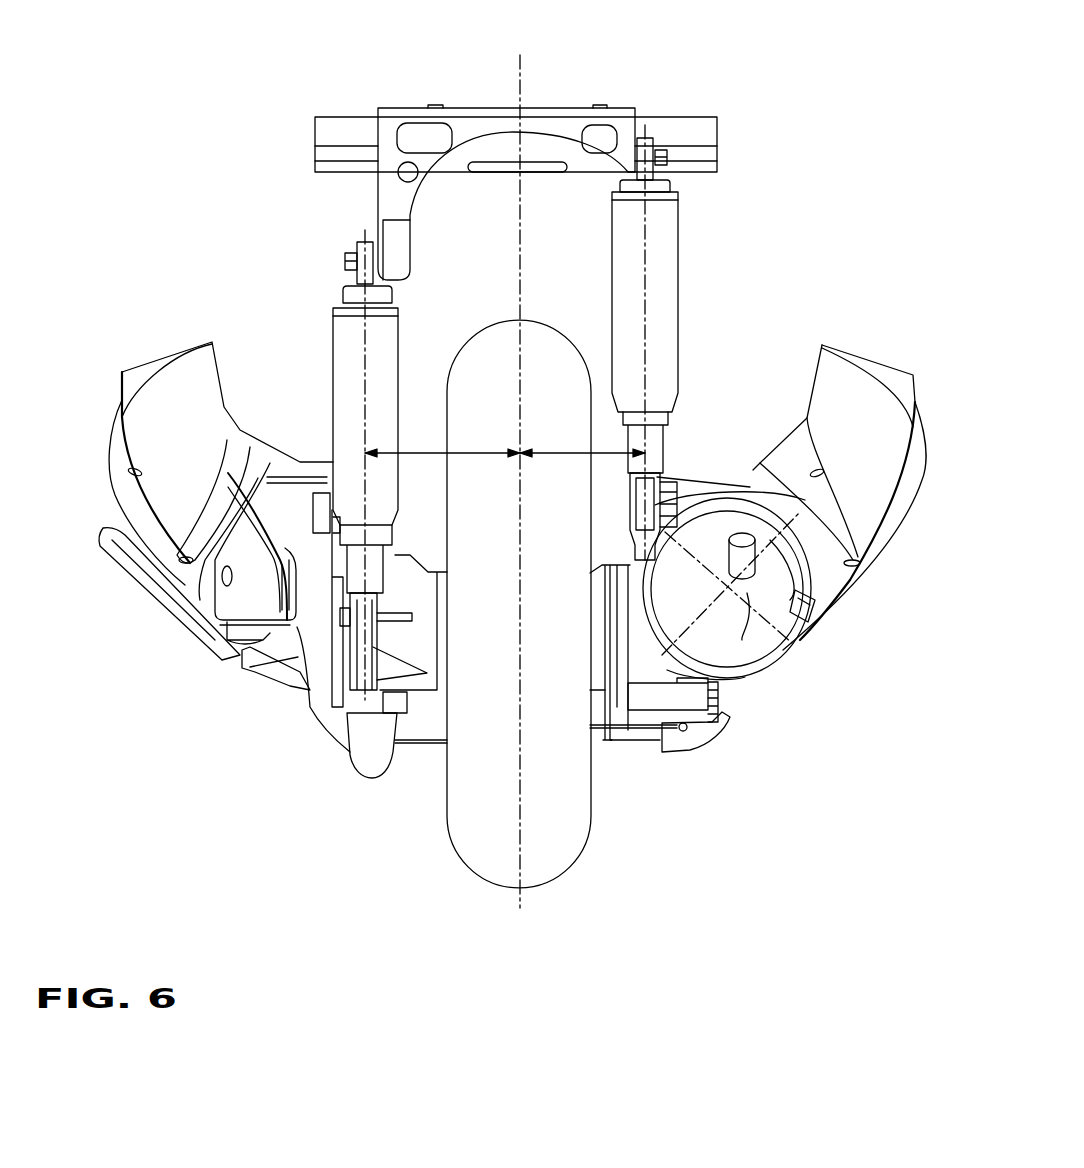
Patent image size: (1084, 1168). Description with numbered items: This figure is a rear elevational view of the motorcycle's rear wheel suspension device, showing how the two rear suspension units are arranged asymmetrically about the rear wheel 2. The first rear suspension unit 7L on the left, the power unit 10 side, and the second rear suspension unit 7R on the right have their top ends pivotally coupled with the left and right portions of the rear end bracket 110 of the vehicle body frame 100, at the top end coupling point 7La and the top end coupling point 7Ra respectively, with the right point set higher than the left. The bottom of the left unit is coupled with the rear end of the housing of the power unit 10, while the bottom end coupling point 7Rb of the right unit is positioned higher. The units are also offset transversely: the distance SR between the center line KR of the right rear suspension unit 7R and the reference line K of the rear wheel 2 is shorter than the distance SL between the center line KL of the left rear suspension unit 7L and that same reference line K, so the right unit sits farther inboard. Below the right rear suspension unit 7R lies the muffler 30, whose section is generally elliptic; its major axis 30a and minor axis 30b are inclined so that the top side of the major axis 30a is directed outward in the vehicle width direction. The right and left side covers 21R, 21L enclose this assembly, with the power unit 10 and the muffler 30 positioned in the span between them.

The rear wheel 2 is at (464, 823).
The power unit 10 is at (245, 677).
The left side cover 21L is at (142, 432).
The right side cover 21R is at (893, 522).
The first rear suspension unit 7L is at (334, 318).
The second rear suspension unit 7R is at (681, 319).
The top end coupling point 7La is at (352, 262).
The top end coupling point 7Ra is at (668, 162).
The bottom end coupling point 7Rb is at (680, 493).
The muffler 30 is at (746, 621).
The major axis 30a is at (803, 600).
The minor axis 30b is at (767, 630).
The vehicle body frame 100 is at (678, 114).
The rear end bracket 110 is at (571, 126).
The reference line K is at (522, 226).
The center line KL is at (368, 318).
The center line KR is at (650, 262).
The distance SL is at (442, 439).
The distance SR is at (582, 439).